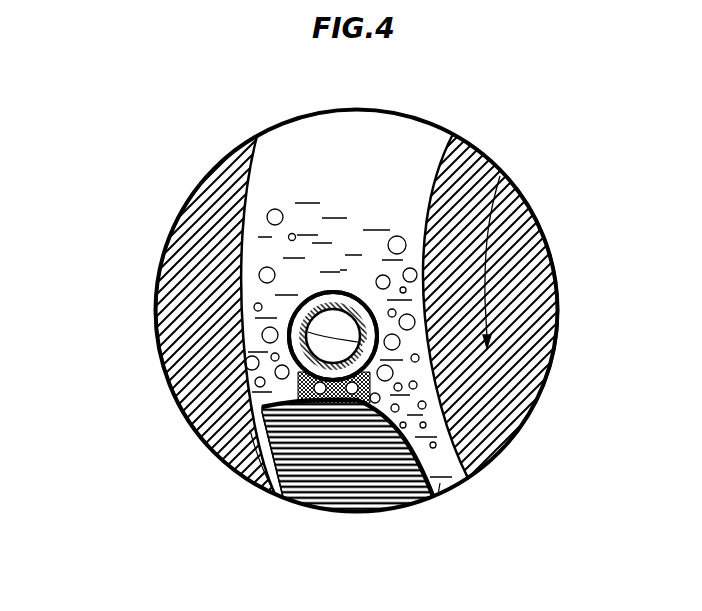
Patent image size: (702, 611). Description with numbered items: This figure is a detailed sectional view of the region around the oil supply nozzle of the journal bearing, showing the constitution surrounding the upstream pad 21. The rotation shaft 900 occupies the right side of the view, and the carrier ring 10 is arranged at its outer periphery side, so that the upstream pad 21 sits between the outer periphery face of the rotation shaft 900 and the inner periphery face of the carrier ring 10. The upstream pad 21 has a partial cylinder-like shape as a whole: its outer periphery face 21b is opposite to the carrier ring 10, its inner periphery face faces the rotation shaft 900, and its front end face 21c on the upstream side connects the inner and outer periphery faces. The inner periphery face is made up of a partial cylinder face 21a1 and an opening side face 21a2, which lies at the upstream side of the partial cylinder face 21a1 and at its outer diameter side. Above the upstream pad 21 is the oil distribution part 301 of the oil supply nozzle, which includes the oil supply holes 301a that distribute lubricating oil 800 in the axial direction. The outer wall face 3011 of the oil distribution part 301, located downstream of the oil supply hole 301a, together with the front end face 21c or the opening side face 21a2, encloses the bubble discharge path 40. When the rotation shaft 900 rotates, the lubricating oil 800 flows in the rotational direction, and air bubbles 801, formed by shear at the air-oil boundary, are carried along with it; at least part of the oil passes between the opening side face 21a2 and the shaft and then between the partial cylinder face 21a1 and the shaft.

The carrier ring 10 is at (197, 188).
The lubricating oil 800 is at (305, 203).
The air bubbles 801 is at (267, 212).
The rotation shaft 900 is at (500, 176).
The oil supply hole 301a is at (288, 322).
The oil distribution part 301 is at (290, 337).
The outer wall face 3011 is at (296, 337).
The bubble discharge path 40 is at (298, 390).
The upstream pad 21 is at (381, 470).
The partial cylinder face 21a1 is at (443, 482).
The opening side face 21a2 is at (358, 410).
The outer periphery face 21b is at (283, 500).
The front end face 21c is at (222, 466).